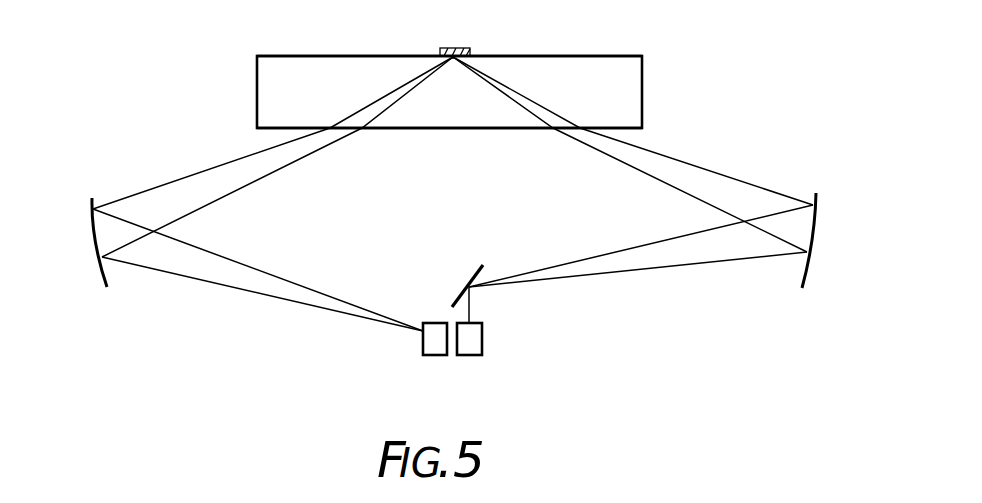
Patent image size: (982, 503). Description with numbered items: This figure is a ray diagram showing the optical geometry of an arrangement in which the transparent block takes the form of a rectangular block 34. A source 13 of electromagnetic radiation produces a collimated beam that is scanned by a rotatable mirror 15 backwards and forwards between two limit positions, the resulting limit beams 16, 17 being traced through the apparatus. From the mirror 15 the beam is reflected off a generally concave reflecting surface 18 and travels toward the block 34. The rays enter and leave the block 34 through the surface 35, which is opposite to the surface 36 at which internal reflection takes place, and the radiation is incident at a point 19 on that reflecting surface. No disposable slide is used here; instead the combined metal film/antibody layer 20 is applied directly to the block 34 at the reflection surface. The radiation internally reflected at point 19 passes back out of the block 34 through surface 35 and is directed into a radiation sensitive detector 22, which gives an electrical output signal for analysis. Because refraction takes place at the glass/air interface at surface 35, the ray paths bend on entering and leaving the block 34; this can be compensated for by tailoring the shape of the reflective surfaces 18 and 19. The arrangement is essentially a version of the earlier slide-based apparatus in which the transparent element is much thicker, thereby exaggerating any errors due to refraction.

The source of electromagnetic radiation 13 is at (470, 340).
The rotatable mirror 15 is at (457, 295).
The limit beam 16 is at (265, 295).
The limit beam 17 is at (280, 278).
The concave reflecting surface 18 is at (812, 222).
The point of internal reflection 19 is at (453, 60).
The combined metal film/antibody layer 20 is at (470, 48).
The radiation sensitive detector 22 is at (433, 343).
The rectangular block 34 is at (623, 92).
The entry/exit surface of block 35 is at (490, 128).
The internal reflection surface of block 36 is at (335, 55).